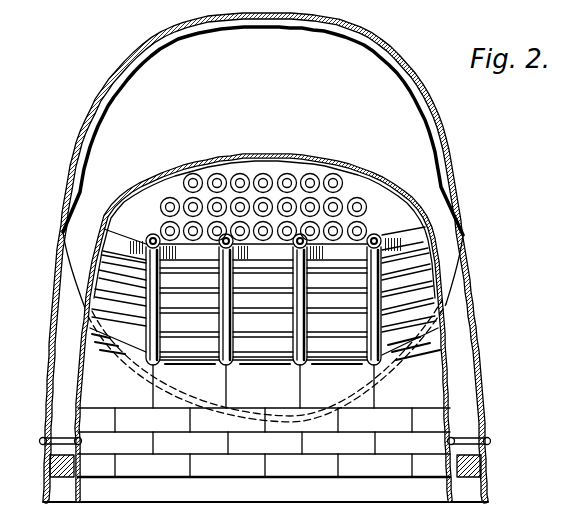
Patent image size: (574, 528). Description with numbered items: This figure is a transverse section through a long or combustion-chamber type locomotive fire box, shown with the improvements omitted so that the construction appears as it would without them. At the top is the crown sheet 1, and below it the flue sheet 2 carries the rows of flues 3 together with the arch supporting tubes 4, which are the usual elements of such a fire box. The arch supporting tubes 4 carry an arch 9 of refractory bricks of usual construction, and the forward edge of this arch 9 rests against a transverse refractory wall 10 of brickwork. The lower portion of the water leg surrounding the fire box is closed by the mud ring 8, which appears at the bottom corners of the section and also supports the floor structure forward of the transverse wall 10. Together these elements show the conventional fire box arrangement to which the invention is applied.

The crown sheet 1 is at (243, 152).
The flue sheet 2 is at (265, 259).
The flues 3 is at (162, 226).
The arch supporting tubes 4 is at (154, 364).
The mud ring 8 is at (45, 464).
The arch 9 is at (265, 295).
The transverse refractory wall 10 is at (264, 388).